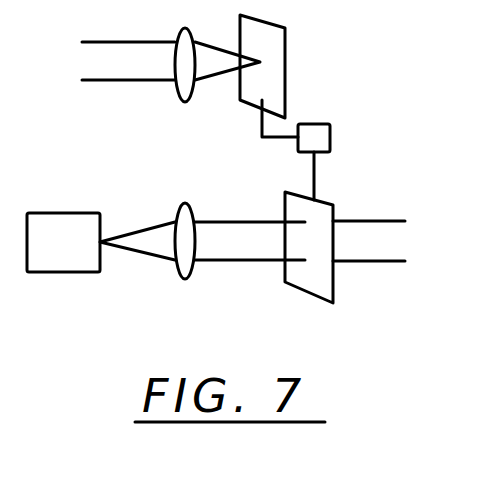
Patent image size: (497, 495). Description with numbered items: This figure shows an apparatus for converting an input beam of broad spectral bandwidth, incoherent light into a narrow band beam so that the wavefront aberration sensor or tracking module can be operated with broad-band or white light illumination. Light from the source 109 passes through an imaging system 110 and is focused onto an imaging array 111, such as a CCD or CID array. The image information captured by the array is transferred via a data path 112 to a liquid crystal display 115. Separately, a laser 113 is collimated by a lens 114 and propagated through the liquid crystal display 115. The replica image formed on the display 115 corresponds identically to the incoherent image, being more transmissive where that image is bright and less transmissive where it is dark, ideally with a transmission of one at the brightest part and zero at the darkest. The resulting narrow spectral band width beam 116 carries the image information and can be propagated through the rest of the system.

The source 109 is at (112, 77).
The imaging system 110 is at (178, 31).
The imaging array 111 is at (276, 22).
The data path 112 is at (316, 124).
The laser 113 is at (72, 213).
The lens 114 is at (182, 206).
The liquid crystal display 115 is at (326, 203).
The narrow spectral band width beam 116 is at (384, 254).